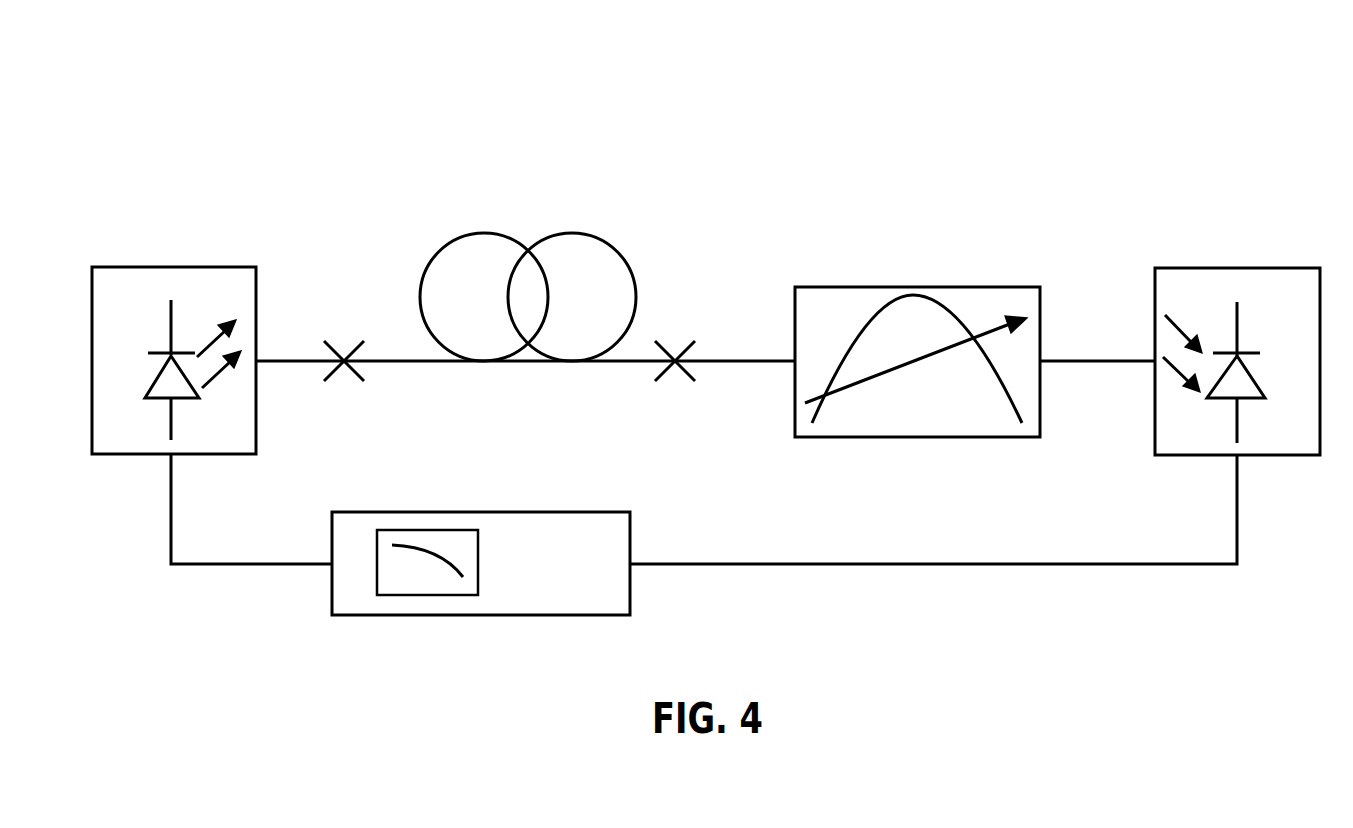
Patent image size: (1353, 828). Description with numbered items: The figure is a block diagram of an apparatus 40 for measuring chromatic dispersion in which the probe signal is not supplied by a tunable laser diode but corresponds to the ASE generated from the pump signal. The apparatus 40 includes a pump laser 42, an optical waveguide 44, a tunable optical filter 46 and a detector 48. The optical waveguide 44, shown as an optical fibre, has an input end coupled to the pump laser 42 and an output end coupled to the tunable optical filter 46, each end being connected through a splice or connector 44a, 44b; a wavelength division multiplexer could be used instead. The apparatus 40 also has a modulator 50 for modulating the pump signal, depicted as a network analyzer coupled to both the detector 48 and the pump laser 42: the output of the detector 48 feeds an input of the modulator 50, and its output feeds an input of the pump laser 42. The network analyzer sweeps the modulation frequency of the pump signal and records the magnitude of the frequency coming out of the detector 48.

The apparatus for measuring chromatic dispersion 40 is at (765, 95).
The pump laser 42 is at (162, 267).
The optical waveguide 44 is at (607, 242).
The splice or connector 44a is at (342, 385).
The splice or connector 44b is at (672, 383).
The tunable optical filter 46 is at (880, 287).
The detector 48 is at (1207, 268).
The modulator 50 is at (368, 512).